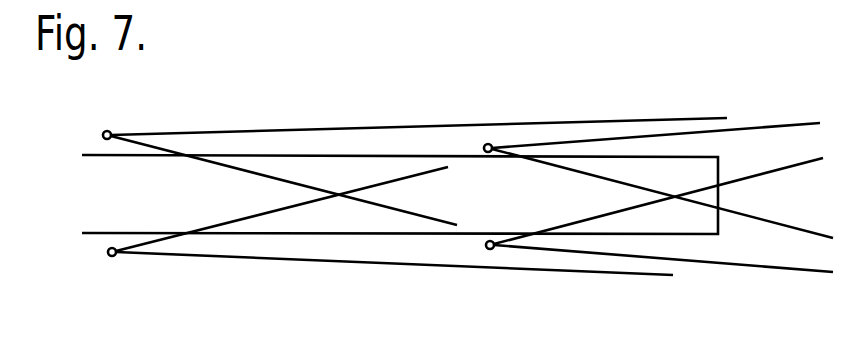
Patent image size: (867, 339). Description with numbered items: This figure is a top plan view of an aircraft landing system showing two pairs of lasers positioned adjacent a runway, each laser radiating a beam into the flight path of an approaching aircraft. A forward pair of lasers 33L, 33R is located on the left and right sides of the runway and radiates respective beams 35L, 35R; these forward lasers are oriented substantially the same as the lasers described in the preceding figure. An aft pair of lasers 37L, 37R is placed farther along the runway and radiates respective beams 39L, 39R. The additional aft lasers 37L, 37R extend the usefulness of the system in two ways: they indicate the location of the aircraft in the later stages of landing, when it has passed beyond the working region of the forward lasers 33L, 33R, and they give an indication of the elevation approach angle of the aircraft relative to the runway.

The aft laser 37R is at (110, 131).
The beam 39R is at (271, 131).
The forward laser 33R is at (487, 144).
The beam 35R is at (752, 128).
The aft laser 37L is at (108, 256).
The beam 39L is at (250, 259).
The forward laser 33L is at (483, 252).
The beam 35L is at (765, 268).